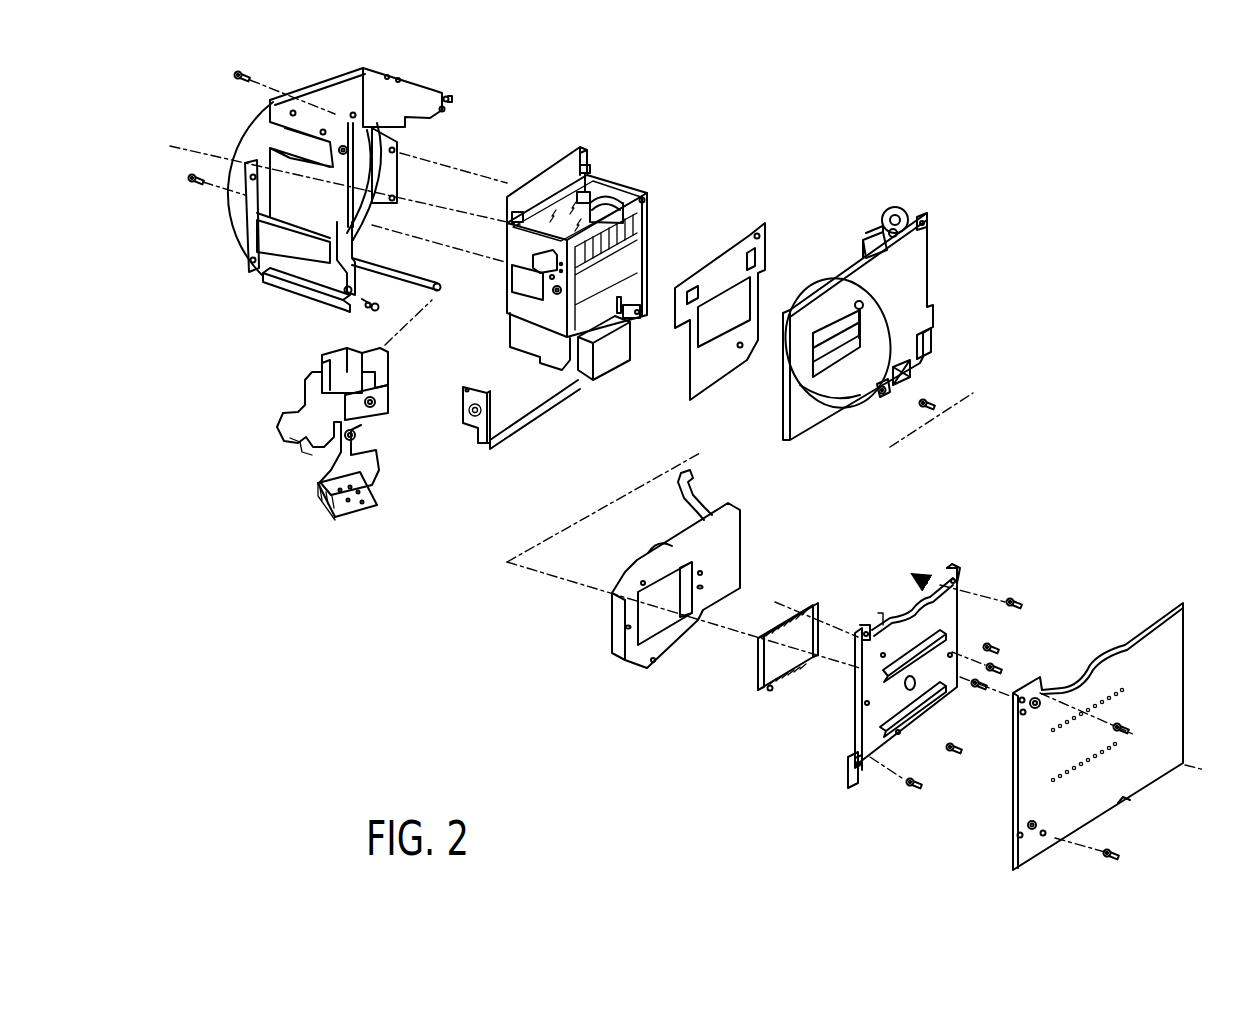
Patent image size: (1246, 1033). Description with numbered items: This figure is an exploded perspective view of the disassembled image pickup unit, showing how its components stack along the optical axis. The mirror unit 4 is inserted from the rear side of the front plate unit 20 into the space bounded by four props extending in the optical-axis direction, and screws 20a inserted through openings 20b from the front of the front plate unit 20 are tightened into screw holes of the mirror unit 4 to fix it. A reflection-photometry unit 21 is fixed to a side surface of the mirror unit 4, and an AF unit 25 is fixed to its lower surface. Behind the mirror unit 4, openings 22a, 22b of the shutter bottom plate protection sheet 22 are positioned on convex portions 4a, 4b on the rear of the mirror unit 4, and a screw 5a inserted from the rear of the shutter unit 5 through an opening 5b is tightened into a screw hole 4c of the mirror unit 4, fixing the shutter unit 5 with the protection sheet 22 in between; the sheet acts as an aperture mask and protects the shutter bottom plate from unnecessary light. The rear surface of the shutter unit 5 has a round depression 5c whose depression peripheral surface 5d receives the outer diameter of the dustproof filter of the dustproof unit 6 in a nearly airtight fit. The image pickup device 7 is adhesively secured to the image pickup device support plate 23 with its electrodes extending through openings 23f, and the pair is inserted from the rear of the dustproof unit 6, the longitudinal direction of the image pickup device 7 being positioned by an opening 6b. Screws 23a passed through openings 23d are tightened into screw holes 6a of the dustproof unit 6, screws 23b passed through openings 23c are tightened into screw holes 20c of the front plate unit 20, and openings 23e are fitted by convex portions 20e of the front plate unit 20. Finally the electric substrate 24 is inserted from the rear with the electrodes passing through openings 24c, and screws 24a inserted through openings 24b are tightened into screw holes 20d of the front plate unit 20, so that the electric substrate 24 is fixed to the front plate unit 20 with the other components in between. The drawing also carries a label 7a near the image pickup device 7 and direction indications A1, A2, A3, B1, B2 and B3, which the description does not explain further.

The front plate unit 20 is at (372, 62).
The screws 20a is at (240, 74).
The openings 20b is at (353, 112).
The screw holes 20c is at (446, 110).
The screw holes 20d is at (340, 146).
The convex portions 20e is at (452, 98).
The mirror unit 4 is at (586, 150).
The convex portion 4a is at (646, 200).
The convex portion 4b is at (633, 318).
The screw hole 4c is at (640, 305).
The AF unit 25 is at (608, 365).
The reflection-photometry unit 21 is at (397, 430).
The shutter bottom plate protection sheet 22 is at (756, 226).
The opening 22a is at (760, 235).
The opening 22b is at (742, 348).
The shutter unit 5 is at (930, 215).
The screw 5a is at (926, 408).
The opening 5b is at (878, 397).
The round depression 5c is at (818, 395).
The depression peripheral surface 5d is at (925, 350).
The dustproof unit 6 is at (750, 525).
The screw holes 6a is at (643, 580).
The opening 6b is at (645, 618).
The image pickup device 7 is at (806, 606).
The hole 7a is at (768, 692).
The image pickup device support plate 23 is at (948, 568).
The screws 23a is at (994, 666).
The screws 23b is at (1014, 600).
The openings 23c is at (864, 630).
The openings 23d is at (882, 670).
The openings 23e is at (955, 570).
The openings 23f is at (905, 688).
The electric substrate 24 is at (1186, 602).
The screws 24a is at (1130, 728).
The openings 24b is at (1037, 708).
The openings 24c is at (1128, 680).
The direction arrow A1 is at (440, 190).
The direction arrow A2 is at (449, 120).
The direction arrow A3 is at (370, 288).
The direction arrow B1 is at (414, 174).
The direction arrow B2 is at (382, 308).
The direction arrow B3 is at (445, 288).